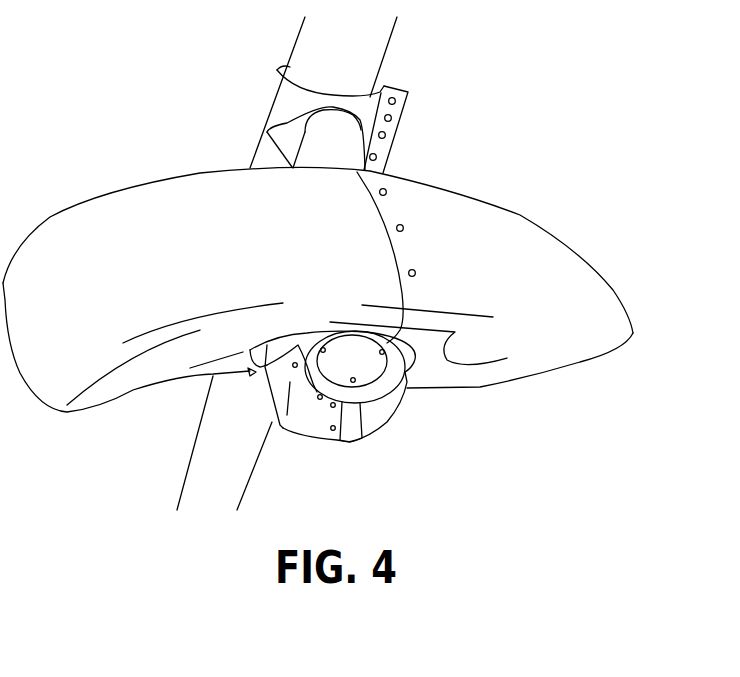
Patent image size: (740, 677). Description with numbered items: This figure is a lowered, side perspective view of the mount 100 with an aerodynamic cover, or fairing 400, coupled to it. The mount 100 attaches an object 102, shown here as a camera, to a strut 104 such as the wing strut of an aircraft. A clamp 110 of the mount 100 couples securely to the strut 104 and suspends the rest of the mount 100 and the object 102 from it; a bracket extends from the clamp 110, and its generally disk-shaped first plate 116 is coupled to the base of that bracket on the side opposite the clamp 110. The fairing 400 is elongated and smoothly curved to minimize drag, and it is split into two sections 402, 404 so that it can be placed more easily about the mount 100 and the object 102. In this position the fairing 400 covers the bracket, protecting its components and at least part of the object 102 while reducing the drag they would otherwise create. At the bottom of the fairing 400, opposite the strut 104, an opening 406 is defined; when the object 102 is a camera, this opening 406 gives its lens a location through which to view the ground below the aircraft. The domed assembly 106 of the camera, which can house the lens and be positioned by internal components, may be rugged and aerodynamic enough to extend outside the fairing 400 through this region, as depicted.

The mount 100 is at (472, 106).
The object 102 is at (383, 398).
The strut 104 is at (363, 42).
The domed assembly 106 is at (367, 438).
The clamp 110 is at (278, 98).
The first plate 116 is at (343, 150).
The fairing 400 is at (230, 190).
The fairing section 402 is at (505, 230).
The fairing section 404 is at (157, 205).
The opening 406 is at (249, 380).